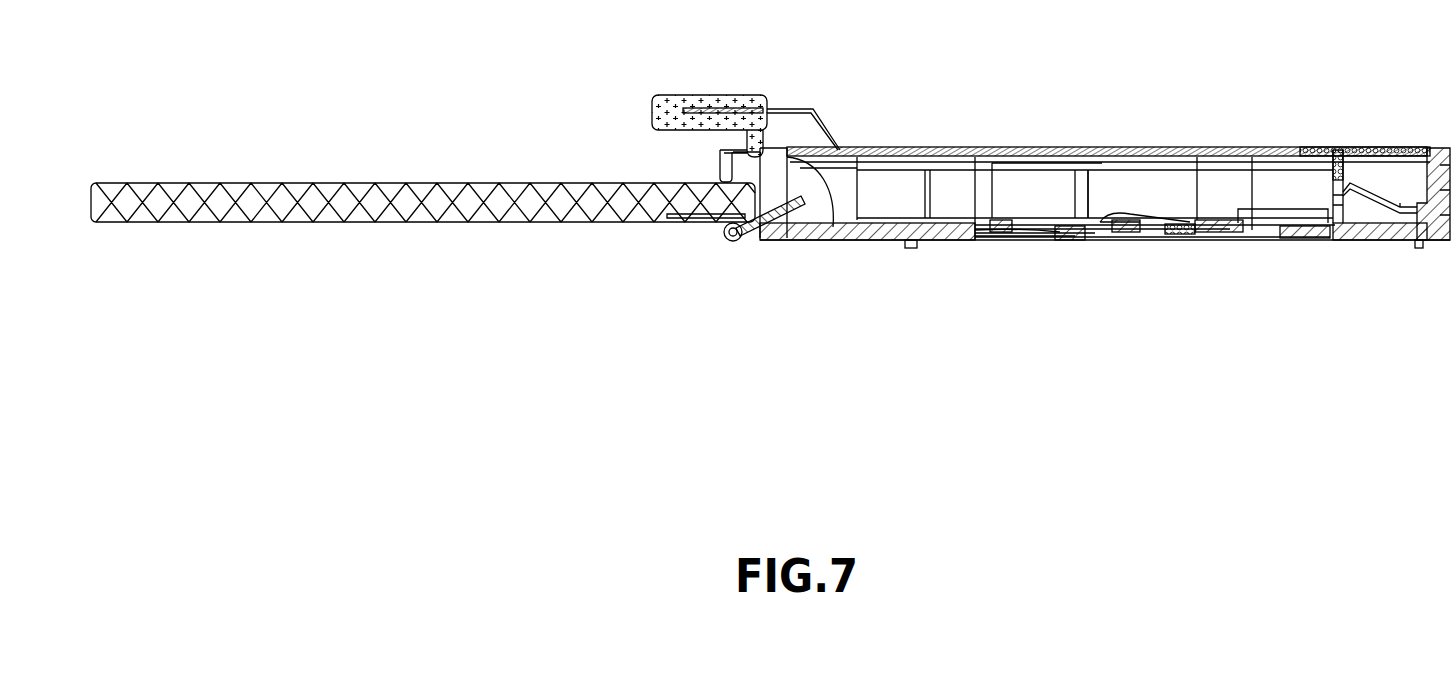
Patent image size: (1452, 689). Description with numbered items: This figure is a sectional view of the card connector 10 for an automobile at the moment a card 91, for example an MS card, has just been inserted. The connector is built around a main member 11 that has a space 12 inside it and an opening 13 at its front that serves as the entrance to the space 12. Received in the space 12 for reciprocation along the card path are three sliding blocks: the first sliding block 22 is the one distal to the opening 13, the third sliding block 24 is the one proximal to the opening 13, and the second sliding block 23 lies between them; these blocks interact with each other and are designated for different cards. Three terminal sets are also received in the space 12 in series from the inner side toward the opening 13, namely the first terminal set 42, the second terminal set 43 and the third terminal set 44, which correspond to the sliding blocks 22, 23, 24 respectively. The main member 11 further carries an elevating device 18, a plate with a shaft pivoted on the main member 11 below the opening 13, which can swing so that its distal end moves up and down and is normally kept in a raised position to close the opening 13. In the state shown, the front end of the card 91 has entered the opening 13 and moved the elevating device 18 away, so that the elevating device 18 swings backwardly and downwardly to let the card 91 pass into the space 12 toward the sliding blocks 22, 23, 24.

The card connector 10 is at (1087, 239).
The main member 11 is at (1031, 246).
The space 12 is at (1103, 195).
The opening 13 is at (717, 180).
The elevating device 18 is at (787, 220).
The first sliding block 22 is at (1345, 160).
The second sliding block 23 is at (1040, 147).
The third sliding block 24 is at (910, 147).
The first terminal set 42 is at (1385, 190).
The second terminal set 43 is at (1118, 222).
The third terminal set 44 is at (998, 242).
The card 91 is at (353, 222).